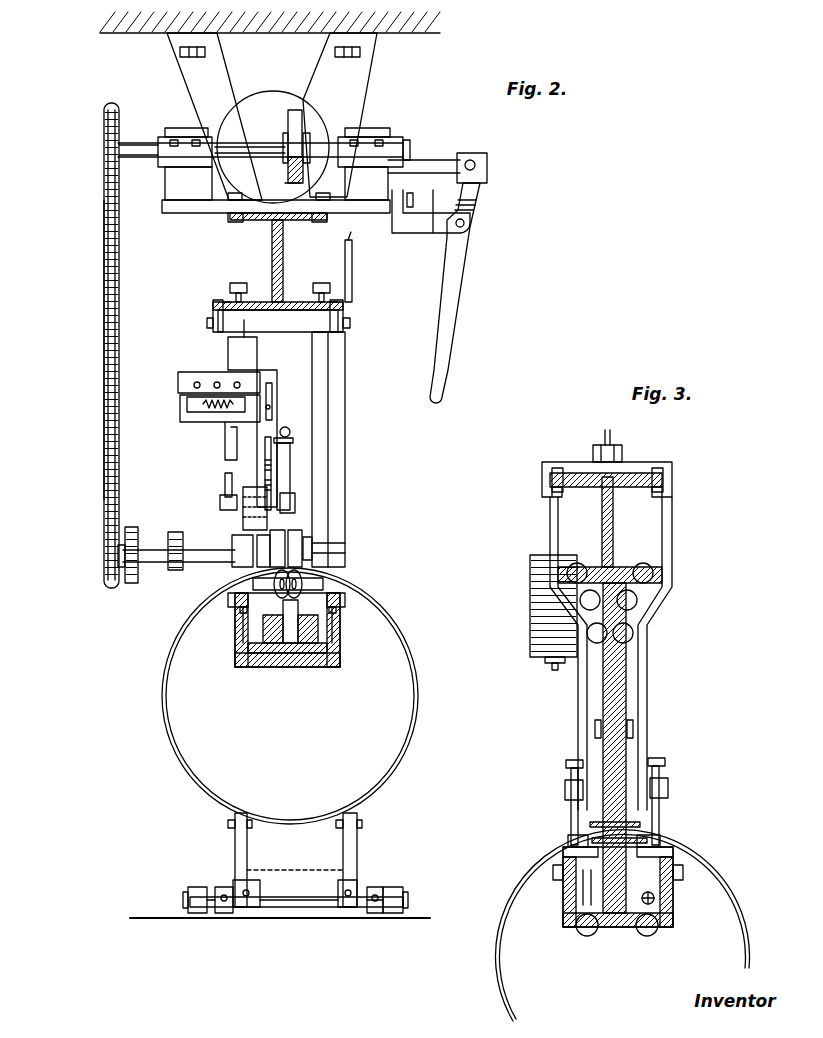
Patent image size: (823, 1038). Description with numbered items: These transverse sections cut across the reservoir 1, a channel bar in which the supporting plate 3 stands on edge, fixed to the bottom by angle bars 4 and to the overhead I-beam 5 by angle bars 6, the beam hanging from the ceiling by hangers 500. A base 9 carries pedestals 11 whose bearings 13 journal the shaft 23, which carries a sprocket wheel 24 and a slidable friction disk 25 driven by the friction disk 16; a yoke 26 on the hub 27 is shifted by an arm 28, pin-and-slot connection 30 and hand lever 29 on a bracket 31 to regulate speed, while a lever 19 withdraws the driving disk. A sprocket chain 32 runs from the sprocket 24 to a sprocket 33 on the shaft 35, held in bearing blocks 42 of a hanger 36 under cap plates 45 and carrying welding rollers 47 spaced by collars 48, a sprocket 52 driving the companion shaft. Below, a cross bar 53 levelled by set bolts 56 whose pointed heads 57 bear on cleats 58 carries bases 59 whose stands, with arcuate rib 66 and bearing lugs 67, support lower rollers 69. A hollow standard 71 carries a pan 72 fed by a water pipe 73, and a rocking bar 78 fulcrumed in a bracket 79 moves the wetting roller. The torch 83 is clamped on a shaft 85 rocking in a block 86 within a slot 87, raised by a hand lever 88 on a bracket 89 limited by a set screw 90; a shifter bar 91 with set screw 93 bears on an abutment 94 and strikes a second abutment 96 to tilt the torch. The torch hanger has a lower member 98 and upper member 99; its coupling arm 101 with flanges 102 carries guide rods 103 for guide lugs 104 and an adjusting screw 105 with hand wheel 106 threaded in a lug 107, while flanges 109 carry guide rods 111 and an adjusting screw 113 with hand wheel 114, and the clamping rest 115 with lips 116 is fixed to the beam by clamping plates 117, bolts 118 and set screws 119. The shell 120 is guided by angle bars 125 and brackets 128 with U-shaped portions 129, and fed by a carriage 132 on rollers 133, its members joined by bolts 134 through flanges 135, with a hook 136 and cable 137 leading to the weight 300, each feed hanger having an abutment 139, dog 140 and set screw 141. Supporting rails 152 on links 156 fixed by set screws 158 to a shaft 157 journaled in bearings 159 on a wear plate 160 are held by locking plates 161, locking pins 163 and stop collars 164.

In FIG. 2, the reservoir 1 is at (290, 700).
In FIG. 3, the reservoir 1 is at (620, 927).
In FIG. 3, the standard or supporting plate 3 is at (628, 695).
In FIG. 3, the angle bars 4 is at (582, 933).
In FIG. 2, the I-beam 5 is at (283, 238).
In FIG. 3, the I-beam 5 is at (613, 530).
In FIG. 3, the angle bars 6 is at (630, 605).
In FIG. 2, the plate or base 9 is at (212, 205).
In FIG. 2, the pedestals 11 is at (276, 183).
In FIG. 2, the bearings 13 is at (185, 130).
In FIG. 2, the friction disk 16 is at (265, 95).
In FIG. 2, the lever 19 is at (352, 273).
In FIG. 2, the shaft 23 is at (230, 145).
In FIG. 2, the sprocket wheel 24 is at (131, 345).
In FIG. 2, the friction pulley or disk 25 is at (300, 112).
In FIG. 2, the yoke 26 is at (285, 183).
In FIG. 2, the hub 27 is at (305, 133).
In FIG. 2, the arm 28 is at (410, 165).
In FIG. 2, the hand lever 29 is at (455, 270).
In FIG. 2, the pin and slot connection 30 is at (480, 165).
In FIG. 2, the bracket 31 is at (415, 234).
In FIG. 2, the sprocket chain 32 is at (105, 284).
In FIG. 2, the sprocket 33 is at (130, 582).
In FIG. 2, the transverse shaft 35 is at (150, 555).
In FIG. 2, the hanger 36 is at (333, 432).
In FIG. 2, the bearing blocks 42 is at (230, 562).
In FIG. 2, the cap plates 45 is at (330, 515).
In FIG. 2, the rollers 47 is at (280, 530).
In FIG. 2, the spacing collars 48 is at (240, 567).
In FIG. 2, the sprocket 52 is at (175, 534).
In FIG. 2, the cross bars 53 is at (270, 668).
In FIG. 2, the set bolts 56 is at (245, 640).
In FIG. 2, the pointed heads 57 is at (245, 620).
In FIG. 2, the flanges or cleats 58 is at (270, 592).
In FIG. 2, the bases or supports 59 is at (325, 667).
In FIG. 2, the arcuate rib 66 is at (300, 662).
In FIG. 2, the bearing lugs 67 is at (322, 583).
In FIG. 2, the rollers 69 is at (249, 667).
In FIG. 2, the standard 71 is at (282, 545).
In FIG. 2, the pan 72 is at (309, 552).
In FIG. 3, the water supply pipe 73 is at (655, 898).
In FIG. 2, the rocking bar 78 is at (294, 548).
In FIG. 2, the bracket 79 is at (240, 355).
In FIG. 2, the torch 83 is at (286, 452).
In FIG. 2, the shaft or pin 85 is at (222, 500).
In FIG. 2, the block 86 is at (230, 470).
In FIG. 2, the slot 87 is at (290, 505).
In FIG. 2, the hand lever 88 is at (284, 470).
In FIG. 2, the bracket 89 is at (272, 440).
In FIG. 2, the set screw 90 is at (290, 432).
In FIG. 2, the shifter bar 91 is at (220, 500).
In FIG. 2, the set screw 93 is at (225, 485).
In FIG. 2, the abutment 94 is at (232, 525).
In FIG. 2, the second abutment 96 is at (245, 480).
In FIG. 2, the lower member 98 is at (260, 432).
In FIG. 2, the upper member 99 is at (258, 345).
In FIG. 2, the lateral coupling arm or offset 101 is at (190, 408).
In FIG. 2, the upstanding flanges 102 is at (190, 400).
In FIG. 2, the guide rods 103 is at (182, 395).
In FIG. 2, the guide lugs 104 is at (178, 378).
In FIG. 2, the adjusting screw 105 is at (200, 425).
In FIG. 2, the hand wheel 106 is at (272, 390).
In FIG. 2, the lug 107 is at (200, 420).
In FIG. 2, the depending flanges 109 is at (242, 378).
In FIG. 2, the guide rods 111 is at (195, 380).
In FIG. 2, the adjusting screw 113 is at (205, 385).
In FIG. 2, the operating head or hand wheel 114 is at (228, 355).
In FIG. 2, the clamping rest or head 115 is at (300, 312).
In FIG. 2, the longitudinal lips 116 is at (225, 300).
In FIG. 2, the clamping plates 117 is at (215, 302).
In FIG. 2, the bolts 118 is at (208, 320).
In FIG. 2, the set screws 119 is at (240, 283).
In FIG. 2, the shells or tubes 120 is at (418, 700).
In FIG. 3, the shells or tubes 120 is at (496, 1000).
In FIG. 3, the angle bars 125 is at (575, 832).
In FIG. 3, the brackets 128 is at (673, 855).
In FIG. 3, the U-shaped portions 129 is at (585, 893).
In FIG. 3, the carriage 132 is at (640, 465).
In FIG. 3, the rollers 133 is at (663, 480).
In FIG. 3, the bolts 134 is at (620, 455).
In FIG. 3, the upstanding flanges 135 is at (610, 430).
In FIG. 3, the hook 136 is at (595, 488).
In FIG. 3, the cable or flexible connection 137 is at (648, 660).
In FIG. 3, the lateral abutment 139 is at (566, 790).
In FIG. 3, the dog 140 is at (642, 843).
In FIG. 3, the set screw 141 is at (568, 766).
In FIG. 2, the bars or rails 152 is at (248, 840).
In FIG. 2, the link or arm 156 is at (235, 850).
In FIG. 2, the shaft 157 is at (300, 907).
In FIG. 2, the set screws 158 is at (245, 907).
In FIG. 2, the bearings 159 is at (195, 895).
In FIG. 2, the metal wear plate 160 is at (195, 912).
In FIG. 2, the locking plates 161 is at (215, 895).
In FIG. 2, the locking pins 163 is at (330, 880).
In FIG. 2, the stop collars 164 is at (225, 908).
In FIG. 3, the weight 300 is at (530, 575).
In FIG. 2, the hangers 500 is at (352, 98).